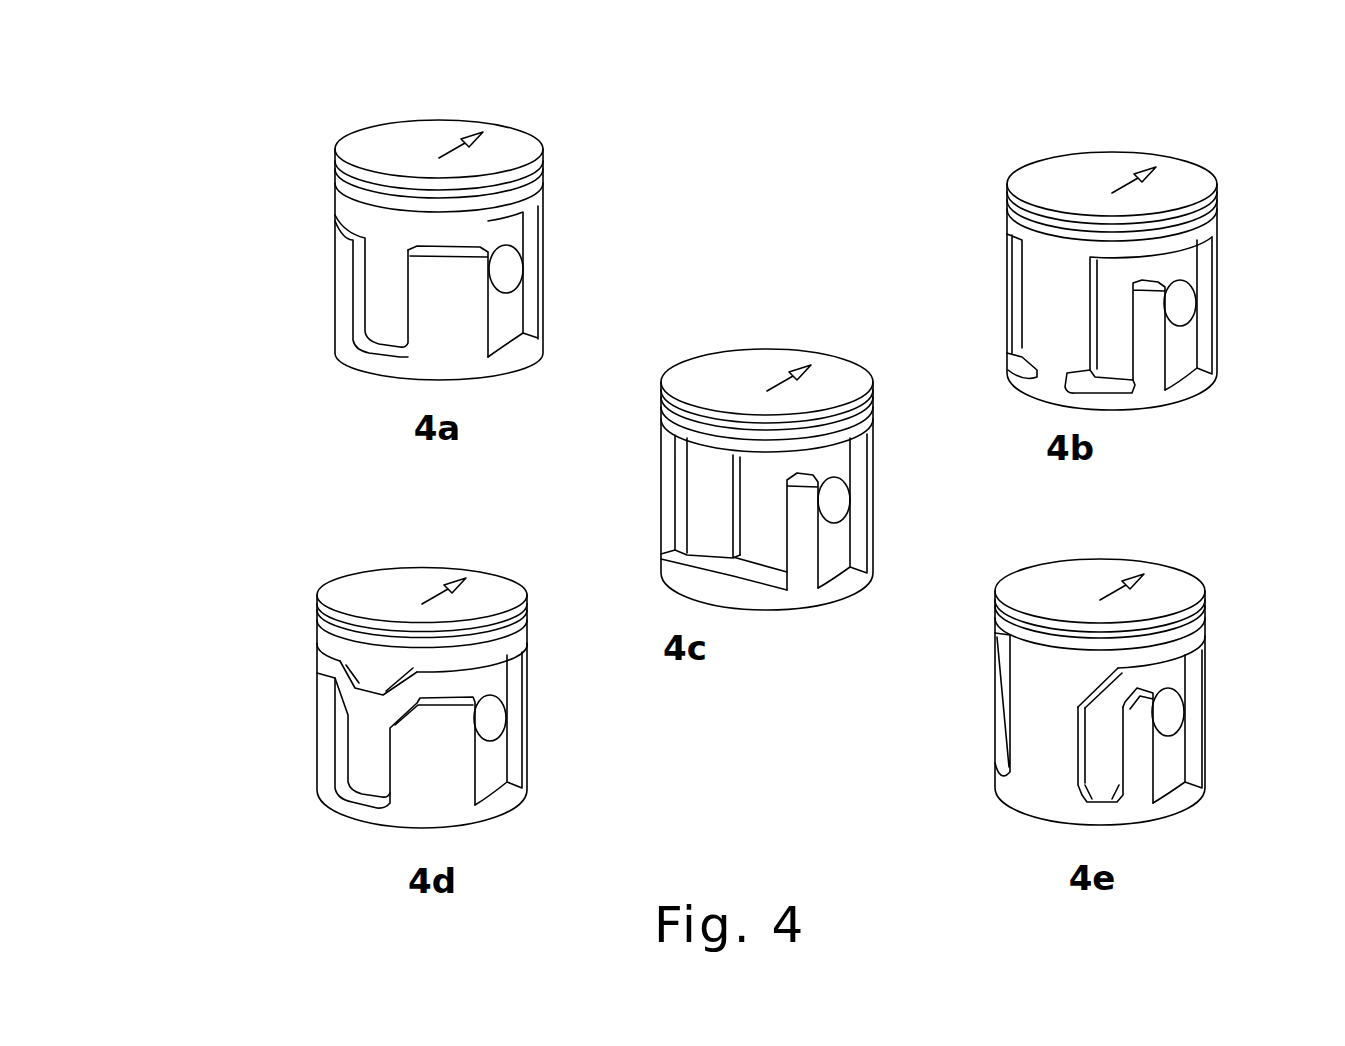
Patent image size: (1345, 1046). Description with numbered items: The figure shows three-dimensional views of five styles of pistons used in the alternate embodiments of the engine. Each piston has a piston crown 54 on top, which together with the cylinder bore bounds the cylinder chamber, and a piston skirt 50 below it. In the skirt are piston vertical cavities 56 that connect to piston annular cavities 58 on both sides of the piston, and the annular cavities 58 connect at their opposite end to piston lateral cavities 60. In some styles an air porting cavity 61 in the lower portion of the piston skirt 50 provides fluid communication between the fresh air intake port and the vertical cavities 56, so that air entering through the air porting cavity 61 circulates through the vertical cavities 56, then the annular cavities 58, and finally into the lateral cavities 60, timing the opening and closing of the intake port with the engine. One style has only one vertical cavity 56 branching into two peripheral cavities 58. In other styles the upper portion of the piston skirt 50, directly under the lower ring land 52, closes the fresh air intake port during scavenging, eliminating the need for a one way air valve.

The piston skirt 50 is at (896, 568).
The lower ring land 52 is at (670, 609).
The piston crown 54 is at (767, 329).
The piston vertical cavities 56 is at (745, 543).
The piston annular cavities 58 is at (781, 375).
The piston lateral cavities 60 is at (888, 485).
The air porting cavity 61 is at (927, 523).